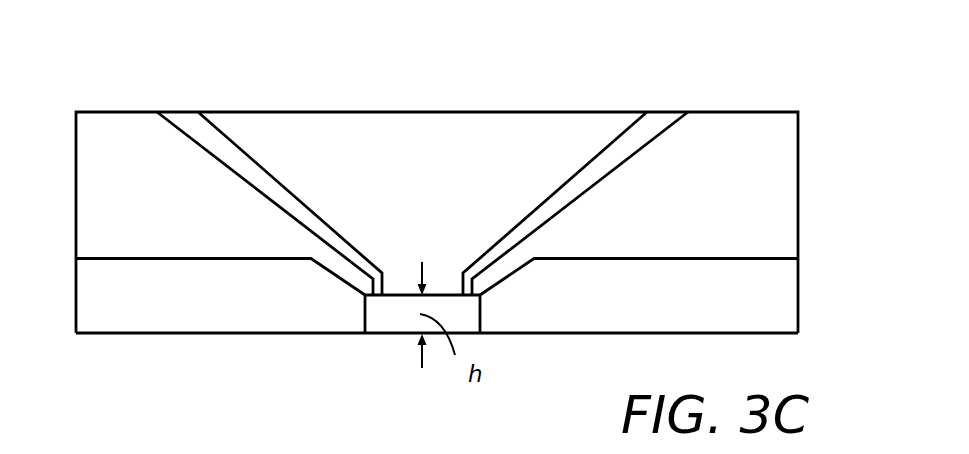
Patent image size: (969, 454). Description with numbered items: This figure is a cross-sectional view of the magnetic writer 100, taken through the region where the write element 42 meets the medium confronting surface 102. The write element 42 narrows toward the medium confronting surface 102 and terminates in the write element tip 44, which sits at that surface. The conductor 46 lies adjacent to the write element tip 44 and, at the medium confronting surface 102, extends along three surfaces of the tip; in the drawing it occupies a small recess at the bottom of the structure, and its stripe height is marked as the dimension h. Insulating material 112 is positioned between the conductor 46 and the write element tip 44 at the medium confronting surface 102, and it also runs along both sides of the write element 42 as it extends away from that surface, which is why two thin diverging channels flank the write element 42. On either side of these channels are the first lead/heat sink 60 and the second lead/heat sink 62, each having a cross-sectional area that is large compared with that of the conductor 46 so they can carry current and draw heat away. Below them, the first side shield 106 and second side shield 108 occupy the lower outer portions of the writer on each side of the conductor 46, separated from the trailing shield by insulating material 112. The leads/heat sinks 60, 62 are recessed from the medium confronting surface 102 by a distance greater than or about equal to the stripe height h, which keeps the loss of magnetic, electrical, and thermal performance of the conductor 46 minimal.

The magnetic writer 100 is at (819, 132).
The medium confronting surface 102 is at (264, 346).
The first side shield 106 is at (681, 310).
The second side shield 108 is at (206, 310).
The write element 42 is at (437, 178).
The write element tip 44 is at (449, 275).
The conductor 46 is at (400, 318).
The first lead/heat sink 60 is at (728, 207).
The second lead/heat sink 62 is at (166, 204).
The insulating material 112 is at (182, 118).